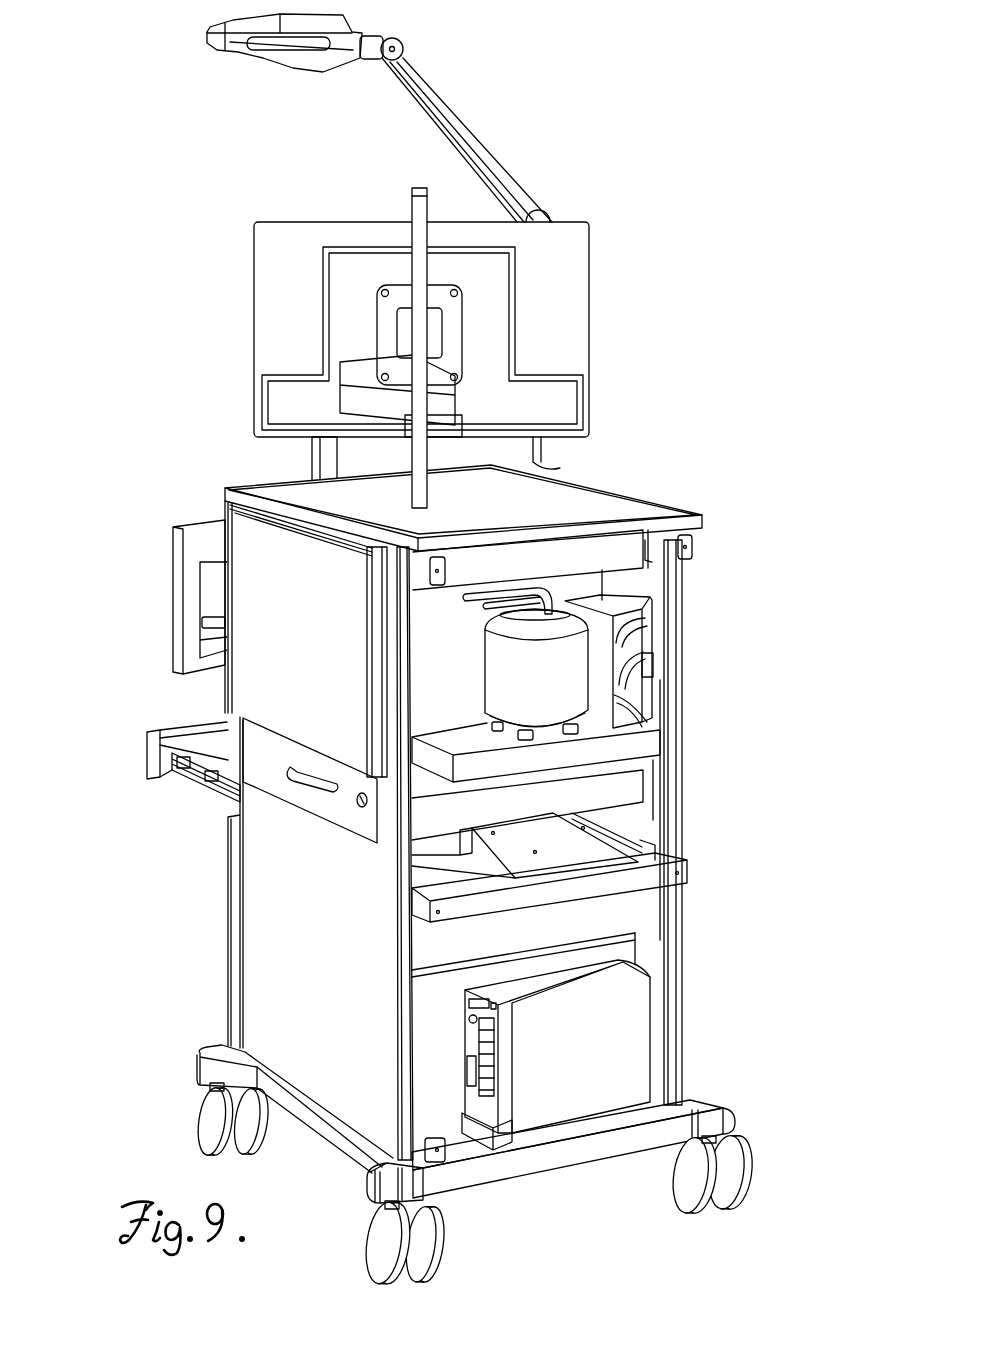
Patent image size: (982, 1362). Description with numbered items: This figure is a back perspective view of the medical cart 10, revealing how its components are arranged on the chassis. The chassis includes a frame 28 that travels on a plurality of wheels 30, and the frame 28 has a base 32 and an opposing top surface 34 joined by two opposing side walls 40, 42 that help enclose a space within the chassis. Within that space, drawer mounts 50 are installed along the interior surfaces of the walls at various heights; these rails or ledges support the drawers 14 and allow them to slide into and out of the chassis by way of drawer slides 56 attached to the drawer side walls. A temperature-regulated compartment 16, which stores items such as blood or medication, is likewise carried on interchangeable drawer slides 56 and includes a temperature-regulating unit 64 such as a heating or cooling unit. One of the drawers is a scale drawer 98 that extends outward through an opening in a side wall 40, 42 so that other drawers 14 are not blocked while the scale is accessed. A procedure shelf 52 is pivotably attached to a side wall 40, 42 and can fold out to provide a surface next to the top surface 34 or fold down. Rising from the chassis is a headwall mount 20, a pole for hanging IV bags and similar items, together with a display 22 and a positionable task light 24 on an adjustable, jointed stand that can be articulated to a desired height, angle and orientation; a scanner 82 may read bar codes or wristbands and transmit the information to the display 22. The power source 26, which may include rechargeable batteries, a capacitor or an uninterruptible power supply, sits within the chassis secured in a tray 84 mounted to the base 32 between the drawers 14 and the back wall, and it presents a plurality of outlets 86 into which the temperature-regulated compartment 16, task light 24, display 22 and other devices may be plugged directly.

The medical cart 10 is at (186, 393).
The drawers 14 is at (152, 745).
The temperature-regulated compartment 16 is at (178, 572).
The headwall mount 20 is at (420, 493).
The display 22 is at (572, 263).
The positionable task light 24 is at (297, 62).
The power source 26 is at (625, 1036).
The frame 28 is at (477, 1177).
The wheels 30 is at (213, 1121).
The base 32 is at (350, 1140).
The top surface 34 is at (630, 505).
The side wall 40 is at (680, 773).
The side wall 42 is at (262, 930).
The drawer mounts 50 is at (648, 828).
The procedure shelf 52 is at (245, 530).
The drawer slides 56 is at (217, 620).
The temperature-regulating unit 64 is at (620, 658).
The scanner 82 is at (327, 452).
The tray 84 is at (605, 1123).
The outlets 86 is at (500, 1108).
The scale drawer 98 is at (348, 815).